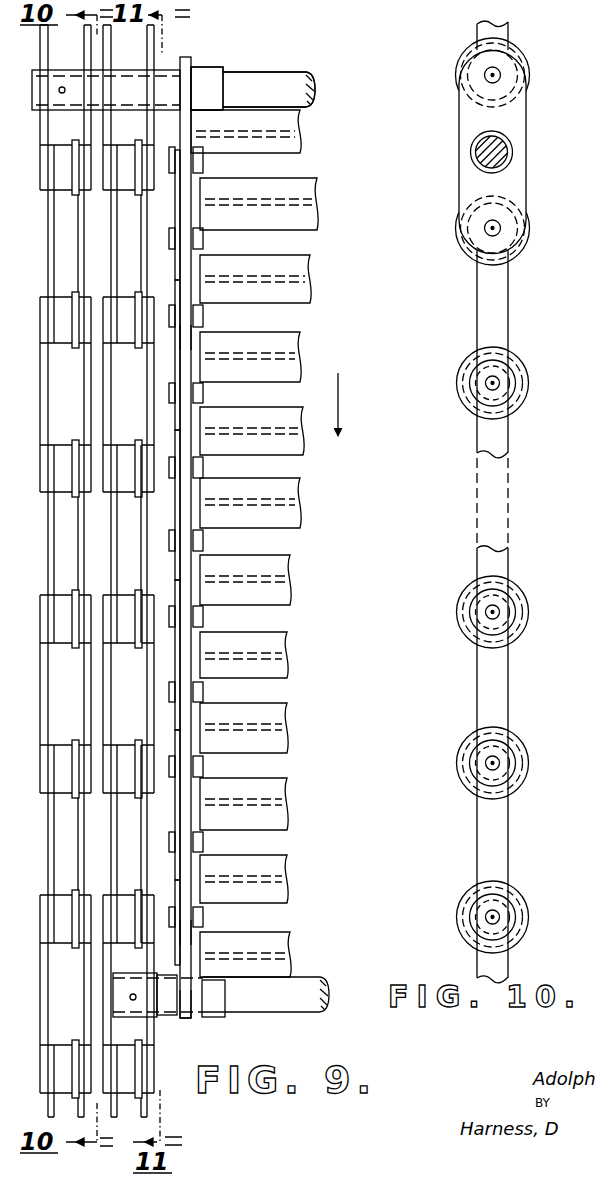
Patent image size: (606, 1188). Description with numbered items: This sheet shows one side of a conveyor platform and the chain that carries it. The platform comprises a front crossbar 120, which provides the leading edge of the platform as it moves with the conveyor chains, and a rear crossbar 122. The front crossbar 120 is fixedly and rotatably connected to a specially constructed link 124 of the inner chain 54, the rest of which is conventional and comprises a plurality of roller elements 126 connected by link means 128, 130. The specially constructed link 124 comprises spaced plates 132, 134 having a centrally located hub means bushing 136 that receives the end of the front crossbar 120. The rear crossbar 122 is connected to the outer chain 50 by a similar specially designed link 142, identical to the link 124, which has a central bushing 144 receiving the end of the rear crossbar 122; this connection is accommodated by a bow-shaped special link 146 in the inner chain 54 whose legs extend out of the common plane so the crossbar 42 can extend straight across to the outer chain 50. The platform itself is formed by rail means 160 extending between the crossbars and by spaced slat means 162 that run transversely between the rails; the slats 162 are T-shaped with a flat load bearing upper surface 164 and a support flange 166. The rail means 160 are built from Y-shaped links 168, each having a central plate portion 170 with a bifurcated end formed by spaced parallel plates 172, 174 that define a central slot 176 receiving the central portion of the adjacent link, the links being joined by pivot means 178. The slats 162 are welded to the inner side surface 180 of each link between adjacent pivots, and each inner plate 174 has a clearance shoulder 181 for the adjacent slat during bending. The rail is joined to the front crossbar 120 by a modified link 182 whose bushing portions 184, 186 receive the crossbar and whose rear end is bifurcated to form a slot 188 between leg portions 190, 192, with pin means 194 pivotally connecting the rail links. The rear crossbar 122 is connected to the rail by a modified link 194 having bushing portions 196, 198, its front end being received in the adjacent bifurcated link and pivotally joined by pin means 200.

In FIG. 9, the crossbar 42 is at (295, 70).
In FIG. 9, the outer chain 50 is at (48, 557).
In FIG. 10, the outer chain 50 is at (476, 453).
In FIG. 9, the inner chain 54 is at (110, 680).
In FIG. 9, the front crossbar 120 is at (318, 977).
In FIG. 9, the rear crossbar 122 is at (314, 100).
In FIG. 10, the rear crossbar 122 is at (478, 152).
In FIG. 9, the specially constructed link 124 is at (109, 1023).
In FIG. 9, the roller elements 126 is at (118, 443).
In FIG. 10, the roller elements 126 is at (528, 612).
In FIG. 9, the link means 128 is at (112, 518).
In FIG. 9, the link means 130 is at (142, 406).
In FIG. 9, the plate 132 is at (112, 866).
In FIG. 9, the plate 134 is at (158, 1043).
In FIG. 9, the hub means bushing 136 is at (128, 973).
In FIG. 9, the specially designed link 142 is at (41, 148).
In FIG. 10, the specially designed link 142 is at (457, 187).
In FIG. 9, the central bushing 144 is at (65, 70).
In FIG. 10, the central bushing 144 is at (513, 157).
In FIG. 9, the special link 146 is at (164, 53).
In FIG. 9, the rail means 160 is at (202, 565).
In FIG. 9, the slat means 162 is at (290, 648).
In FIG. 9, the load bearing upper surface 164 is at (284, 713).
In FIG. 9, the support flange 166 is at (291, 732).
In FIG. 9, the links 168 is at (207, 346).
In FIG. 9, the central plate portion 170 is at (188, 417).
In FIG. 9, the plate 172 is at (176, 296).
In FIG. 9, the inner plate 174 is at (193, 338).
In FIG. 9, the central slot 176 is at (198, 362).
In FIG. 9, the pivot means 178 is at (204, 313).
In FIG. 9, the inner side surface 180 is at (202, 643).
In FIG. 9, the clearance shoulder 181 is at (203, 300).
In FIG. 9, the modified link 182 is at (198, 1020).
In FIG. 9, the bushing portion 184 is at (171, 1018).
In FIG. 9, the bushing portion 186 is at (219, 993).
In FIG. 9, the slot 188 is at (204, 963).
In FIG. 9, the leg portion 190 is at (176, 922).
In FIG. 9, the leg portion 192 is at (198, 933).
In FIG. 9, the modified link 194 is at (206, 915).
In FIG. 9, the bushing portion 196 is at (218, 87).
In FIG. 9, the bushing portion 198 is at (133, 98).
In FIG. 9, the pin means 200 is at (205, 163).